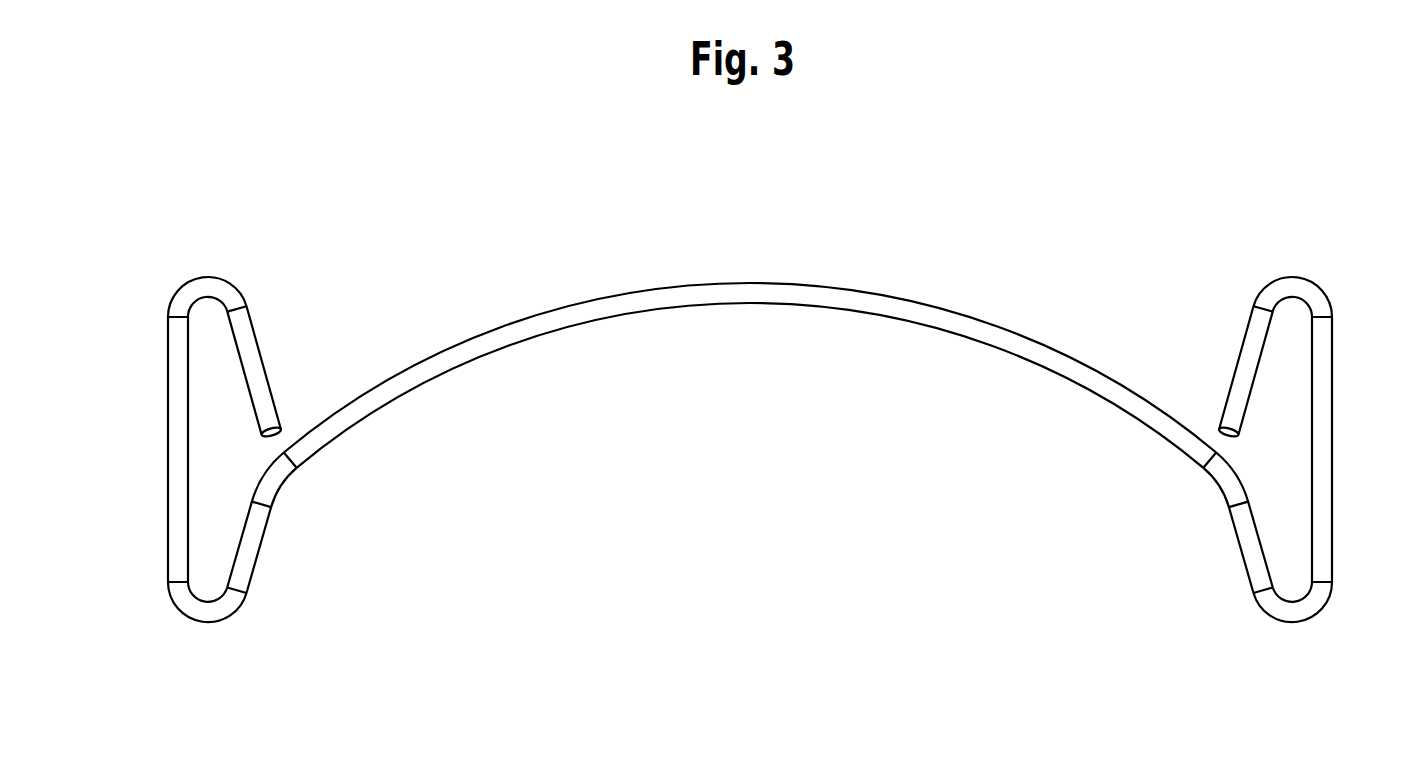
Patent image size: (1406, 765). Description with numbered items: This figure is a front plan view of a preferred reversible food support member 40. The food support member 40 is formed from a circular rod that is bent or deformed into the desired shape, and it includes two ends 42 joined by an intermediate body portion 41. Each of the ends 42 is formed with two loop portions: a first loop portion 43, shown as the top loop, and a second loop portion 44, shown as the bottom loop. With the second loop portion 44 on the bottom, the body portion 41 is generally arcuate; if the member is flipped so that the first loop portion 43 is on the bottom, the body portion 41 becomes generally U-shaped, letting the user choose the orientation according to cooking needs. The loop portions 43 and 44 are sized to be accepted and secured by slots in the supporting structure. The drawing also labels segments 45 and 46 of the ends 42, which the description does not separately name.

The reversible food support member 40 is at (1261, 252).
The intermediate body portion 41 is at (694, 263).
The end 42 is at (141, 471).
The first loop portion 43 is at (212, 283).
The second loop portion 44 is at (216, 616).
The straight leg 45 is at (167, 330).
The oblique leg 46 is at (266, 365).